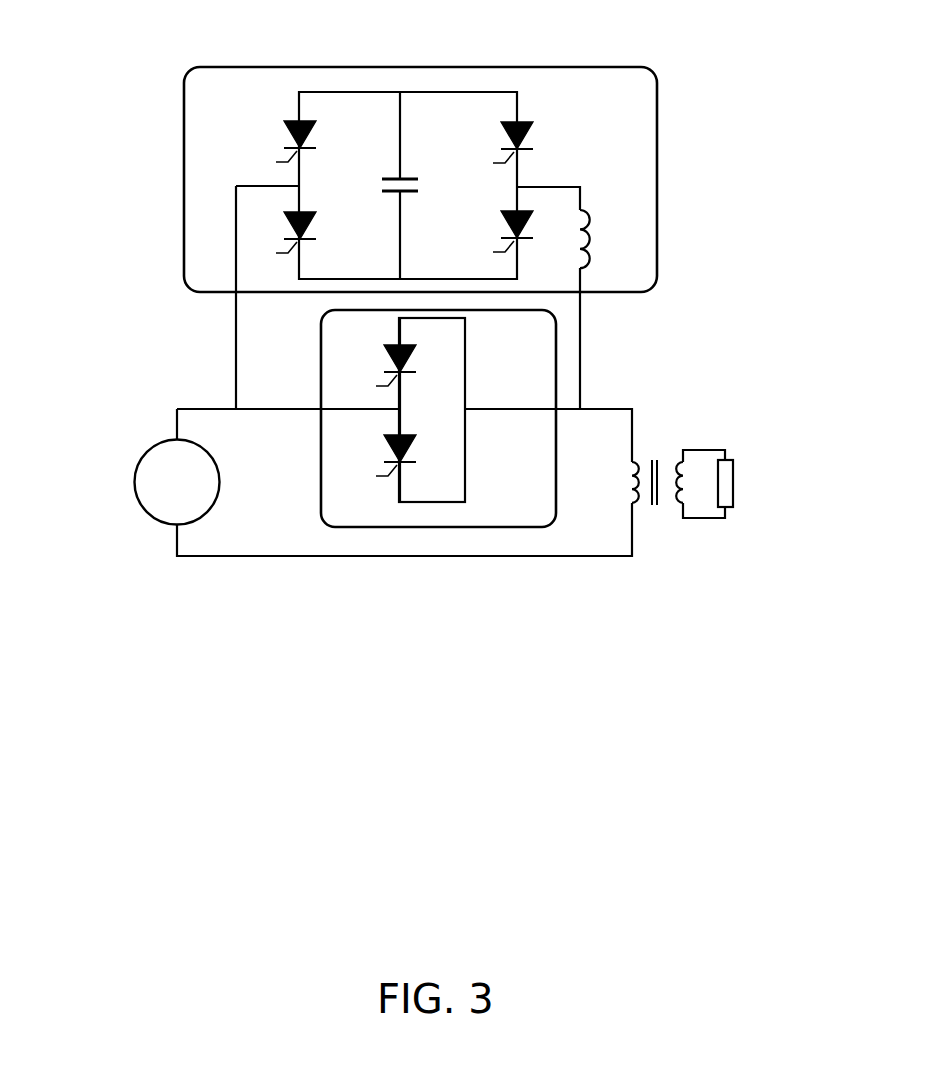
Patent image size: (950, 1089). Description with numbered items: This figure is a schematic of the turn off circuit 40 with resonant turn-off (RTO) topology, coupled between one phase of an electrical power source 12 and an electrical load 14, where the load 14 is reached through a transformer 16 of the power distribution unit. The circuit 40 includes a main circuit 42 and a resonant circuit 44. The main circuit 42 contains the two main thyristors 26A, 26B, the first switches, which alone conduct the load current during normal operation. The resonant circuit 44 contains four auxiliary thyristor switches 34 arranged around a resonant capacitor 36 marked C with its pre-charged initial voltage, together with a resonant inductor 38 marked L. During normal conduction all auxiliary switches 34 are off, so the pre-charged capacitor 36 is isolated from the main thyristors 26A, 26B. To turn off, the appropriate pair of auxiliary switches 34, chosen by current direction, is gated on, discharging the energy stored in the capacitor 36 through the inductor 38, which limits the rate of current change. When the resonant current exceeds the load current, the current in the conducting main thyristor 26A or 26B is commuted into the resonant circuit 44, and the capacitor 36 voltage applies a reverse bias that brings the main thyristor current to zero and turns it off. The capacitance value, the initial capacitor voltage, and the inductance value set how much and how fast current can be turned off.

The turn off circuit 40 is at (100, 117).
The resonant circuit 44 is at (596, 67).
The auxiliary thyristor switches 34 is at (284, 124).
The resonant capacitor 36 is at (382, 181).
The resonant inductor 38 is at (596, 215).
The main circuit 42 is at (557, 443).
The main thyristor 26A is at (385, 349).
The main thyristor 26B is at (385, 434).
The electrical power source 12 is at (165, 440).
The transformer 16 is at (655, 459).
The electrical load 14 is at (733, 459).